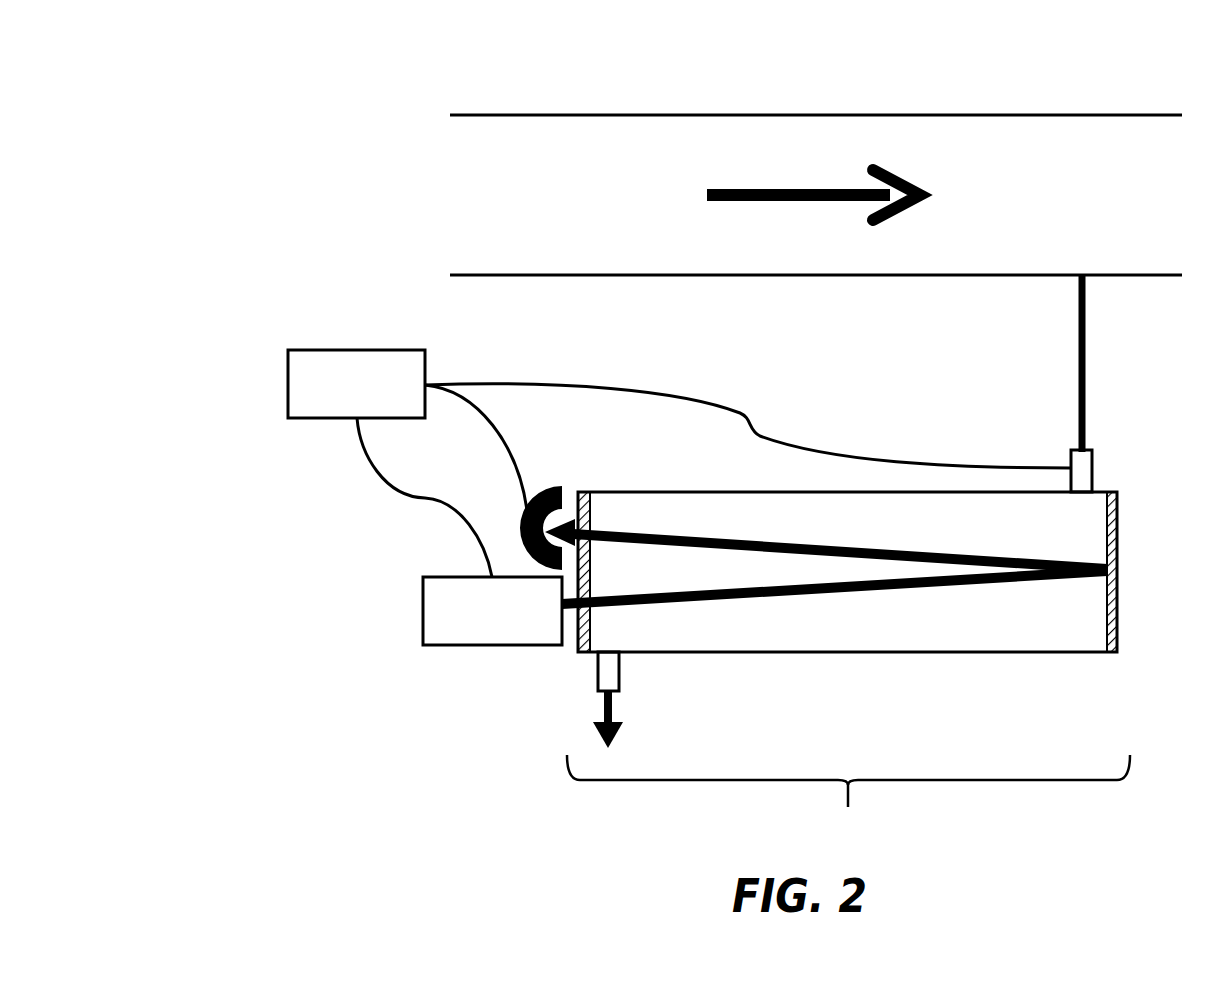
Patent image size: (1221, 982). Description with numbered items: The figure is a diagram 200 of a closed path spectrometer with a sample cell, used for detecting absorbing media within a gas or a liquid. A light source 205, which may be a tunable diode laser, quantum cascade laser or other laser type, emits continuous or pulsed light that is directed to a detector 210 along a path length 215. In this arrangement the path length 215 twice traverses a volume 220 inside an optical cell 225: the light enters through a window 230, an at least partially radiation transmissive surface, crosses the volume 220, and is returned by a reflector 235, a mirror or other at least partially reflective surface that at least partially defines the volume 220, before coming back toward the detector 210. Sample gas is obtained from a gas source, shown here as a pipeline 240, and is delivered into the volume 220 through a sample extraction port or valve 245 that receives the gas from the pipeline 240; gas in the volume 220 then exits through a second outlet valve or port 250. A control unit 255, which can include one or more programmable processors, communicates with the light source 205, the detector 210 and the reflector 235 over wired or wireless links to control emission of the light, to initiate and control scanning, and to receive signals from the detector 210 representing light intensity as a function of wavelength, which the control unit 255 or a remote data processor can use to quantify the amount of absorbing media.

The diagram 200 is at (262, 90).
The light source 205 is at (512, 625).
The detector 210 is at (546, 481).
The path length 215 is at (916, 578).
The volume 220 is at (822, 639).
The optical cell 225 is at (848, 799).
The window 230 is at (566, 647).
The reflector 235 is at (1114, 481).
The pipeline 240 is at (1152, 168).
The sample extraction port or valve 245 is at (1065, 457).
The second outlet valve or port 250 is at (587, 675).
The control unit 255 is at (377, 400).